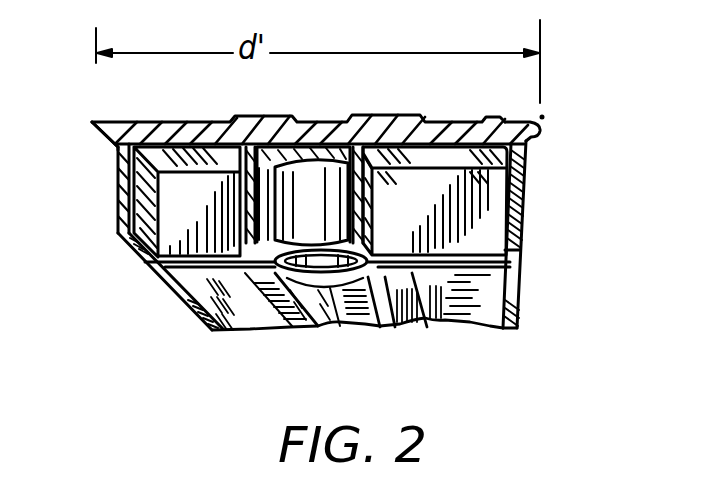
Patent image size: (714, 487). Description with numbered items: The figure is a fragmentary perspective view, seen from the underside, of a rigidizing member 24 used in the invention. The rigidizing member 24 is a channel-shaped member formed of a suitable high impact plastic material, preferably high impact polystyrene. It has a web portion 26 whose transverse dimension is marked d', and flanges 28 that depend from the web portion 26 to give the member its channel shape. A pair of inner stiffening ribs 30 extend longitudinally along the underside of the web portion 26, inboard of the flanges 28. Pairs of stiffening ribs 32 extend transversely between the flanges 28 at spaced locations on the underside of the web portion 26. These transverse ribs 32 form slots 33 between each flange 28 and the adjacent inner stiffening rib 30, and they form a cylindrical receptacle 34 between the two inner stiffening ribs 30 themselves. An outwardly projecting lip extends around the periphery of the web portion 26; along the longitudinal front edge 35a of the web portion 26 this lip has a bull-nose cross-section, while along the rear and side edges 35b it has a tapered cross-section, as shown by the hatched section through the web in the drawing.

The rigidizing member 24 is at (117, 212).
The web portion 26 is at (315, 130).
The flanges 28 is at (183, 293).
The inner stiffening ribs 30 is at (303, 320).
The transverse stiffening ribs 32 is at (185, 233).
The slots 33 is at (229, 270).
The cylindrical receptacle 34 is at (323, 272).
The longitudinal front edge 35a is at (523, 128).
The rear and side edges 35b is at (96, 110).